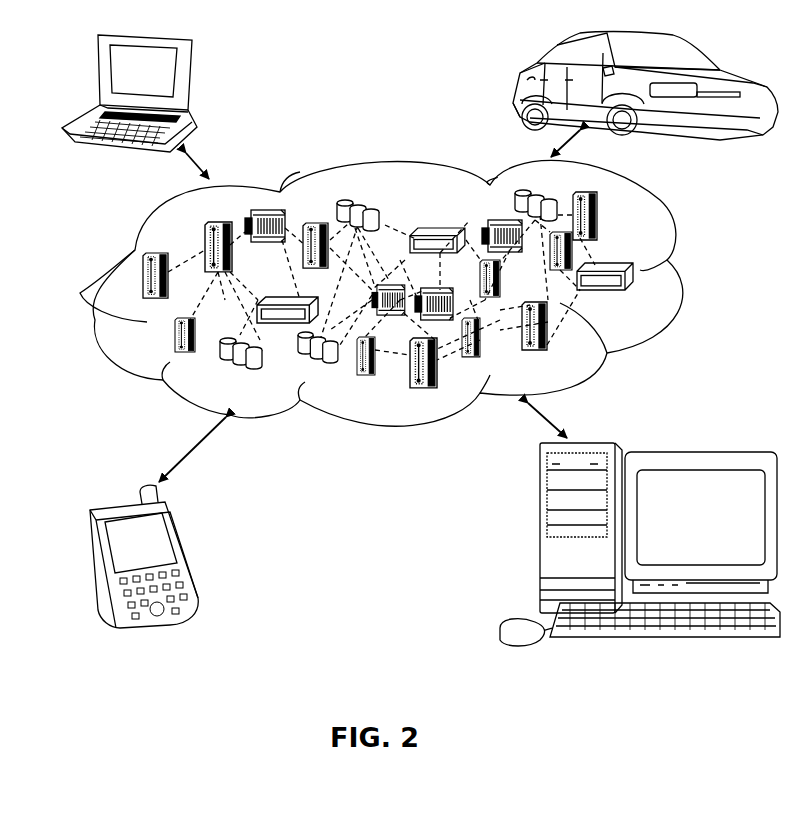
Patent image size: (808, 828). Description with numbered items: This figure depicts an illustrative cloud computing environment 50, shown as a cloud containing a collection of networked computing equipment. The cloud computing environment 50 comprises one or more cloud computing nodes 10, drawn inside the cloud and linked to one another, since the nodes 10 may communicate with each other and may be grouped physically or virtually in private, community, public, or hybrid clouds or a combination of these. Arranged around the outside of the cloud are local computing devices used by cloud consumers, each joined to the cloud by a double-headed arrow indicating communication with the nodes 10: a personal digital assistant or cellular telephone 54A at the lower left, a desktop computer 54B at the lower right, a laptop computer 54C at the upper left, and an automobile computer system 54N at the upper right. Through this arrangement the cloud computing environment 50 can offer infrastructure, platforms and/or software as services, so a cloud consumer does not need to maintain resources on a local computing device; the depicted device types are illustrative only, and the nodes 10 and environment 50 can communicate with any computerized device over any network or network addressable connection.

The cloud computing nodes 10 is at (655, 297).
The cloud computing environment 50 is at (676, 246).
The personal digital assistant (PDA) or cellular telephone 54A is at (185, 551).
The desktop computer 54B is at (538, 535).
The laptop computer 54C is at (196, 78).
The automobile computer system 54N is at (520, 82).